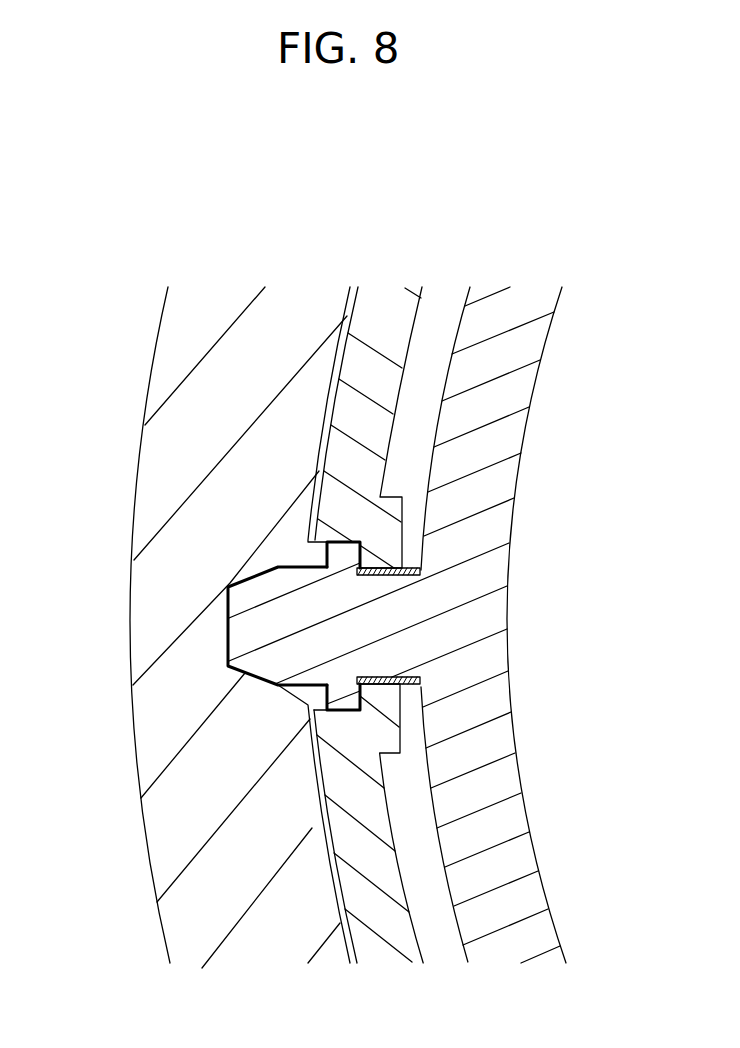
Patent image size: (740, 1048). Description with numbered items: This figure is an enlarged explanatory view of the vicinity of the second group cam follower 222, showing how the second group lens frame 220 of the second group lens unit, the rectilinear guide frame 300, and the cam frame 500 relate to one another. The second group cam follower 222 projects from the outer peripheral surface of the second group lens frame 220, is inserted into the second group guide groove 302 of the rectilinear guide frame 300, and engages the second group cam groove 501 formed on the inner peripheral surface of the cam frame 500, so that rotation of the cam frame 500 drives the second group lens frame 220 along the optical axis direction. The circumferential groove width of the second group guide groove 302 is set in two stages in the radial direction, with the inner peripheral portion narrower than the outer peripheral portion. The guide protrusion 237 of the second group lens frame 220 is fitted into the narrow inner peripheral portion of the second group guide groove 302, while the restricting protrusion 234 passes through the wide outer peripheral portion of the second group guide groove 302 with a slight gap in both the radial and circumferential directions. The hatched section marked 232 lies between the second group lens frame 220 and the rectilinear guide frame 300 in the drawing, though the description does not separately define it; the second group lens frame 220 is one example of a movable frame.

The cam frame 500 is at (193, 380).
The second group cam groove 501 is at (270, 563).
The second group cam follower 222 is at (268, 607).
The restricting protrusion 234 is at (345, 551).
The rectilinear guide frame 300 is at (375, 335).
The second group guide groove 302 is at (422, 688).
The second group lens frame 220 is at (498, 443).
The connecting portion 232 is at (385, 621).
The guide protrusion 237 is at (420, 566).